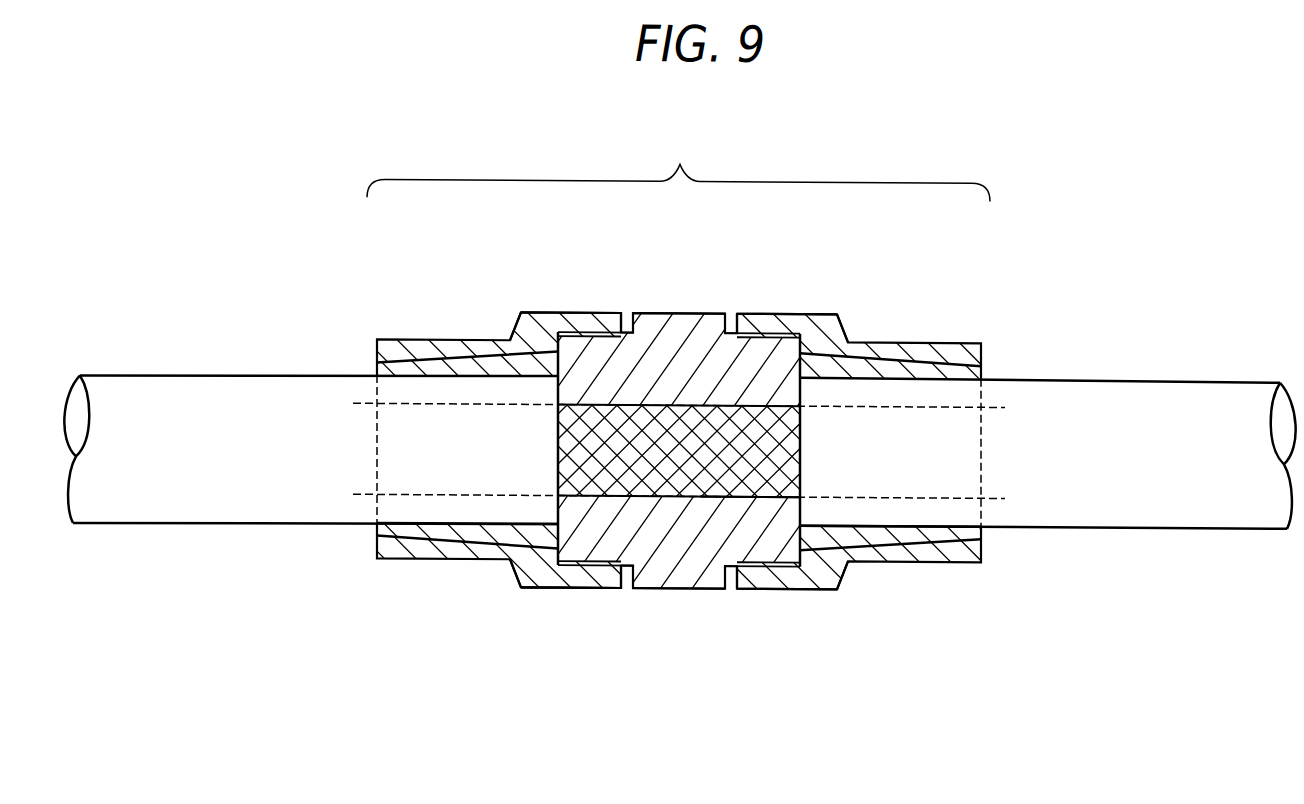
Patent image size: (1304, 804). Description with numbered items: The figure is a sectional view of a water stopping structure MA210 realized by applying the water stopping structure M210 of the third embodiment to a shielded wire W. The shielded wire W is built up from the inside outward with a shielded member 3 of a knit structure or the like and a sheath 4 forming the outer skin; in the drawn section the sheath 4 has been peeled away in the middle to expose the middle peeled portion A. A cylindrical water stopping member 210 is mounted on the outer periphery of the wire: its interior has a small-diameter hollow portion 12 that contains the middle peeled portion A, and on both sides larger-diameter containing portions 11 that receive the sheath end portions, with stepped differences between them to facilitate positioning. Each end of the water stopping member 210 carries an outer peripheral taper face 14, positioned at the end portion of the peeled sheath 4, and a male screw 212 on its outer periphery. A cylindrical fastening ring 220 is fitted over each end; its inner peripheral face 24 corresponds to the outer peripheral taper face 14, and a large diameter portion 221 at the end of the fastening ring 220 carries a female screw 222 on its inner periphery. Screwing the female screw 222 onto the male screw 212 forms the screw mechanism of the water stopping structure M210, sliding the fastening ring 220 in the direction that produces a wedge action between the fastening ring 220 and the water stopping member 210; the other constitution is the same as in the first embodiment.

The shielded wire W is at (226, 538).
The sheath 4 is at (397, 512).
The containing portion of sheath end portion 11 is at (488, 524).
The hollow portion 12 is at (623, 491).
The shielded member 3 is at (678, 465).
The middle peeled portion A is at (741, 512).
The outer peripheral taper face 14 is at (460, 346).
The inner peripheral face 24 is at (437, 364).
The fastening ring 220 is at (409, 328).
The large diameter portion 221 is at (573, 312).
The female screw 222 is at (603, 338).
The male screw 212 is at (537, 346).
The water stopping member 210 is at (666, 301).
The water stopping structure M210 is at (678, 166).
The water stopping structure MA210 is at (537, 653).